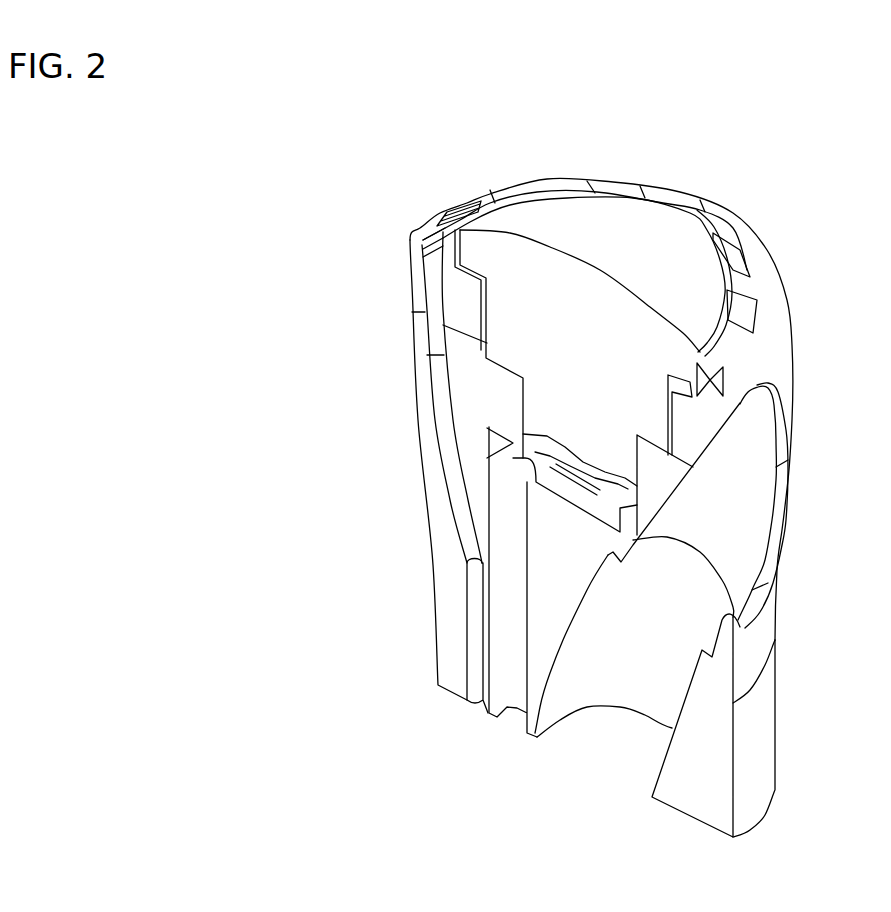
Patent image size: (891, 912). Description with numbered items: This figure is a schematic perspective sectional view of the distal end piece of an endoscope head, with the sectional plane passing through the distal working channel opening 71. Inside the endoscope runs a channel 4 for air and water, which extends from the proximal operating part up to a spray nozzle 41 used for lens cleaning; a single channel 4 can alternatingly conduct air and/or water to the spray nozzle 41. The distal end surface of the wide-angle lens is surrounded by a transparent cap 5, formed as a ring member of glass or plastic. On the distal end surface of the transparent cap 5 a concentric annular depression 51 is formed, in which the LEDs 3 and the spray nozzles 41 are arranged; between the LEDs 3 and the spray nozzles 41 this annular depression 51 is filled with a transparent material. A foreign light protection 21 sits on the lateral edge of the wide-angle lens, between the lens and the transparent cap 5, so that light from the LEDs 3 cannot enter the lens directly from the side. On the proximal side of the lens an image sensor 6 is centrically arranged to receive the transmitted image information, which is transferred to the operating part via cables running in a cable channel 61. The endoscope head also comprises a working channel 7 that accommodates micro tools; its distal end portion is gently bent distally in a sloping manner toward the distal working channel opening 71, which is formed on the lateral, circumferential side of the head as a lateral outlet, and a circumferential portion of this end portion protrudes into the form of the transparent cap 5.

The LEDs 3 is at (600, 186).
The spray nozzle 41 is at (452, 220).
The foreign light protection 21 is at (672, 447).
The transparent cap 5 is at (418, 270).
The concentric annular depression 51 is at (712, 382).
The image sensor 6 is at (537, 453).
The cable channel 61 is at (505, 513).
The distal working channel opening 71 is at (767, 485).
The working channel 7 is at (718, 518).
The channel 4 is at (477, 595).